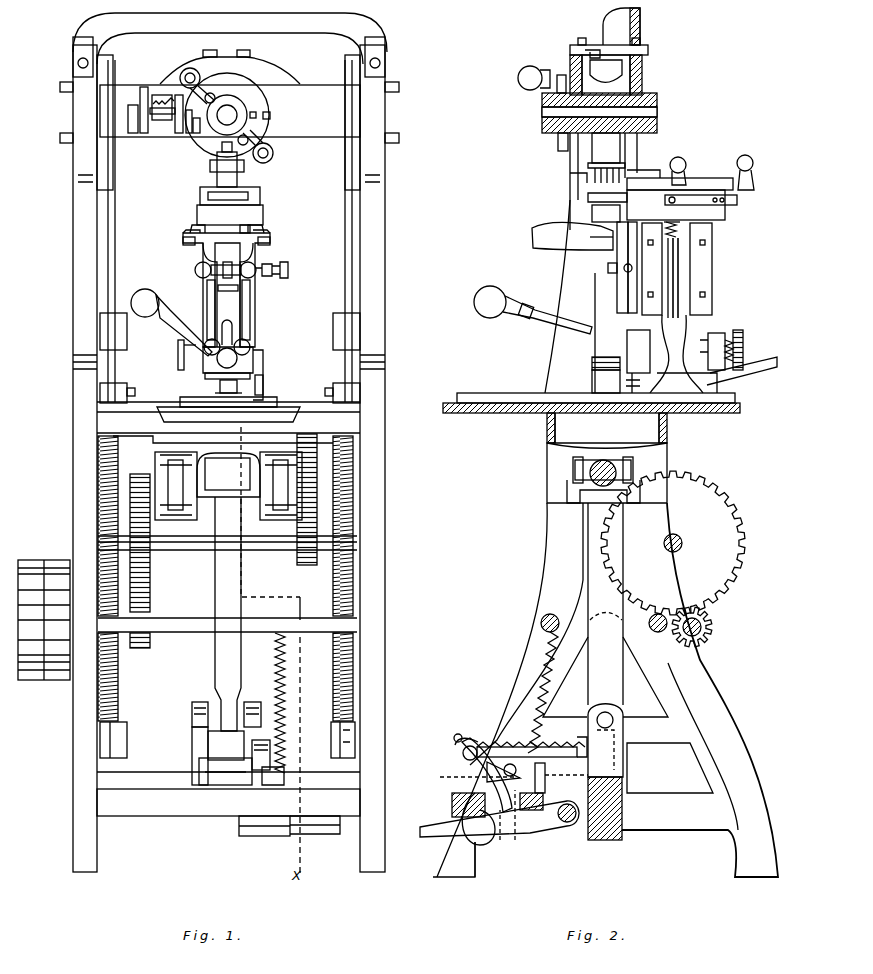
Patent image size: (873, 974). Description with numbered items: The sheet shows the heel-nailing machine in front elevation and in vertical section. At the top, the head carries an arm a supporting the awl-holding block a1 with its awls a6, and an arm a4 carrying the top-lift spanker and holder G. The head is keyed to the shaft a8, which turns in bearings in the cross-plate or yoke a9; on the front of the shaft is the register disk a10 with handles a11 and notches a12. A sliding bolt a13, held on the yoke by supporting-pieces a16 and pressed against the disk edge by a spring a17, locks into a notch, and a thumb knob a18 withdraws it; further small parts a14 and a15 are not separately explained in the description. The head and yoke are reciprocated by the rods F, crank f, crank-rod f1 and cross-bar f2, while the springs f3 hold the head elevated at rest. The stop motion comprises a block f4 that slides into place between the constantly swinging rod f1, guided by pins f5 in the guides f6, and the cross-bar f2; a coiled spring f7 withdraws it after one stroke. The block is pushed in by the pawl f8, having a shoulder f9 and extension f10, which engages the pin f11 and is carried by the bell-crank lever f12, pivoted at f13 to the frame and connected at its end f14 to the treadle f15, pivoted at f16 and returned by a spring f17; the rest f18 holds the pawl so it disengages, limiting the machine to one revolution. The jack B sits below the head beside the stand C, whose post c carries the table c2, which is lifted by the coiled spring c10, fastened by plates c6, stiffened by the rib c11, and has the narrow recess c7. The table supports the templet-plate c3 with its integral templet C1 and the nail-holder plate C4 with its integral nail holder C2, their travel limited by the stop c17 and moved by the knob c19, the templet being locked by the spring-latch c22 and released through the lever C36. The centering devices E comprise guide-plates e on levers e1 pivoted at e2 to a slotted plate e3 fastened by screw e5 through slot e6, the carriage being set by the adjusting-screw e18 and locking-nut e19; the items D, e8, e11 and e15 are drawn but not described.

In FIG. 2, the arm a is at (606, 158).
In FIG. 1, the awl-holding block a1 is at (245, 165).
In FIG. 2, the awl-holding block a1 is at (635, 160).
In FIG. 2, the arm a4 is at (603, 68).
In FIG. 1, the awls a6 is at (260, 170).
In FIG. 2, the awls a6 is at (575, 176).
In FIG. 1, the shaft a8 is at (230, 103).
In FIG. 2, the shaft a8 is at (545, 117).
In FIG. 1, the cross-plate or yoke a9 is at (298, 112).
In FIG. 2, the cross-plate or yoke a9 is at (572, 66).
In FIG. 1, the register wheel or disk a10 is at (246, 98).
In FIG. 2, the register wheel or disk a10 is at (556, 145).
In FIG. 1, the handles a11 is at (276, 154).
In FIG. 1, the notches a12 is at (205, 160).
In FIG. 1, the sliding bolt a13 is at (188, 134).
In FIG. 1, the spring a14 is at (164, 100).
In FIG. 1, the link pin a15 is at (197, 135).
In FIG. 1, the supporting-pieces a16 is at (134, 122).
In FIG. 1, the spring a17 is at (152, 88).
In FIG. 1, the thumb piece or knob a18 is at (178, 135).
In FIG. 2, the jack B is at (605, 300).
In FIG. 2, the stand C is at (712, 290).
In FIG. 1, the templet C1 is at (285, 422).
In FIG. 1, the nail holder C2 is at (265, 210).
In FIG. 2, the nail holder C2 is at (660, 186).
In FIG. 1, the post or bracket c is at (233, 369).
In FIG. 1, the table c2 is at (256, 345).
In FIG. 1, the templet-plate c3 is at (260, 362).
In FIG. 2, the nail-holder plate C4 is at (591, 418).
In FIG. 2, the plates c6 is at (702, 253).
In FIG. 1, the narrow recess c7 is at (264, 380).
In FIG. 2, the coiled spring c10 is at (712, 228).
In FIG. 2, the rib or abutment c11 is at (700, 268).
In FIG. 2, the handle and stop c17 is at (686, 168).
In FIG. 2, the handle or knob c19 is at (753, 165).
In FIG. 2, the spring-latch c22 is at (701, 207).
In FIG. 2, the lever C36 is at (742, 374).
In FIG. 2, the treadle lever D is at (499, 826).
In FIG. 1, the shoe and heel centering and adjusting devices E is at (252, 292).
In FIG. 2, the shoe and heel centering and adjusting devices E is at (575, 290).
In FIG. 1, the guide-plates e is at (270, 238).
In FIG. 1, the lever e1 is at (250, 310).
In FIG. 2, the lever e1 is at (590, 315).
In FIG. 1, the pivot e2 is at (205, 362).
In FIG. 2, the pivot e2 is at (600, 345).
In FIG. 1, the plate e3 is at (227, 296).
In FIG. 1, the screw e5 is at (223, 384).
In FIG. 1, the slot e6 is at (229, 330).
In FIG. 1, the screw e8 is at (226, 263).
In FIG. 1, the clamp jaw e11 is at (264, 228).
In FIG. 2, the clamp jaw e11 is at (585, 230).
In FIG. 1, the pin e15 is at (251, 216).
In FIG. 2, the adjusting-screw e18 is at (745, 340).
In FIG. 1, the locking-nut e19 is at (178, 352).
In FIG. 1, the rods F is at (345, 262).
In FIG. 2, the top-lift spanker and holder G is at (648, 46).
In FIG. 1, the crank f is at (231, 475).
In FIG. 2, the crank f is at (583, 505).
In FIG. 1, the crank-rod f1 is at (241, 580).
In FIG. 2, the crank-rod f1 is at (605, 604).
In FIG. 1, the cross-bar f2 is at (160, 778).
In FIG. 2, the cross-bar f2 is at (622, 812).
In FIG. 1, the springs f3 is at (358, 545).
In FIG. 1, the block f4 is at (225, 758).
In FIG. 2, the block f4 is at (566, 763).
In FIG. 1, the pins f5 is at (263, 730).
In FIG. 2, the pins f5 is at (620, 712).
In FIG. 2, the guides f6 is at (625, 763).
In FIG. 2, the coiled spring f7 is at (512, 740).
In FIG. 2, the pawl f8 is at (503, 765).
In FIG. 2, the shoulder f9 is at (464, 792).
In FIG. 2, the extension f10 is at (532, 736).
In FIG. 2, the pin or arm f11 is at (460, 752).
In FIG. 1, the bell-crank lever f12 is at (304, 762).
In FIG. 2, the bell-crank lever f12 is at (512, 786).
In FIG. 2, the pivot f13 is at (470, 848).
In FIG. 2, the end f14 is at (500, 845).
In FIG. 1, the treadle f15 is at (320, 840).
In FIG. 2, the pivot f16 is at (565, 838).
In FIG. 1, the spring f17 is at (286, 690).
In FIG. 2, the spring f17 is at (530, 672).
In FIG. 1, the arm or rest f18 is at (282, 750).
In FIG. 2, the arm or rest f18 is at (517, 845).